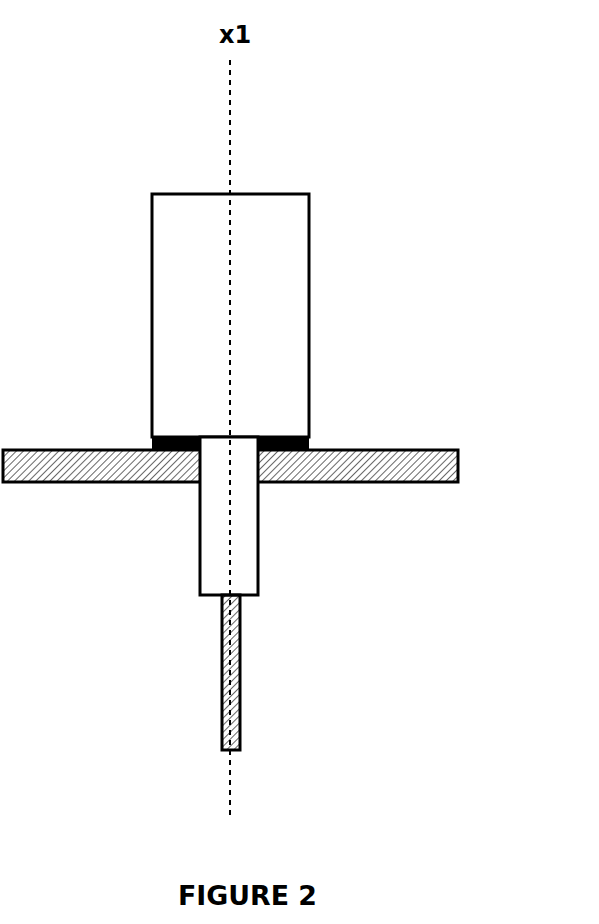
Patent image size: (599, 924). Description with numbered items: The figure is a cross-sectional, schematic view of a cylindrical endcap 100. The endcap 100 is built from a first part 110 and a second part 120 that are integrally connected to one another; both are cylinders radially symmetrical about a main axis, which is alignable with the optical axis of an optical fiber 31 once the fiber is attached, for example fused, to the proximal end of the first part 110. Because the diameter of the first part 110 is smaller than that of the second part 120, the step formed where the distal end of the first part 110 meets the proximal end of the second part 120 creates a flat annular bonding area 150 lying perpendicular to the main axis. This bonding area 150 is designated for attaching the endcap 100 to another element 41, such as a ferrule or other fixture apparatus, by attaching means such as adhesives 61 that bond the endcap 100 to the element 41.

The cylindrical endcap 100 is at (357, 163).
The second part 120 is at (152, 272).
The flat annular bonding area 150 is at (320, 441).
The adhesives 61 is at (272, 452).
The element 41 is at (428, 475).
The first part 110 is at (210, 540).
The optical fiber 31 is at (240, 703).